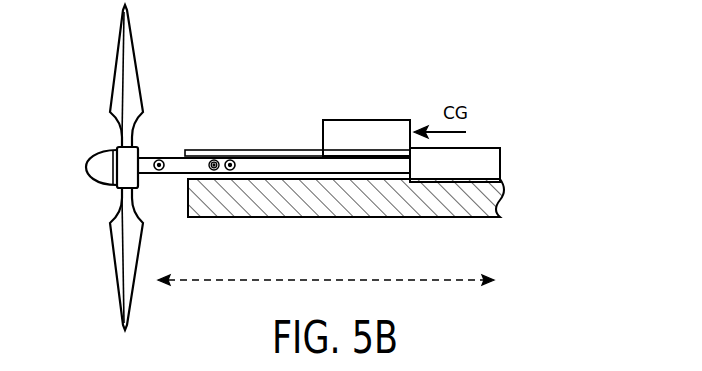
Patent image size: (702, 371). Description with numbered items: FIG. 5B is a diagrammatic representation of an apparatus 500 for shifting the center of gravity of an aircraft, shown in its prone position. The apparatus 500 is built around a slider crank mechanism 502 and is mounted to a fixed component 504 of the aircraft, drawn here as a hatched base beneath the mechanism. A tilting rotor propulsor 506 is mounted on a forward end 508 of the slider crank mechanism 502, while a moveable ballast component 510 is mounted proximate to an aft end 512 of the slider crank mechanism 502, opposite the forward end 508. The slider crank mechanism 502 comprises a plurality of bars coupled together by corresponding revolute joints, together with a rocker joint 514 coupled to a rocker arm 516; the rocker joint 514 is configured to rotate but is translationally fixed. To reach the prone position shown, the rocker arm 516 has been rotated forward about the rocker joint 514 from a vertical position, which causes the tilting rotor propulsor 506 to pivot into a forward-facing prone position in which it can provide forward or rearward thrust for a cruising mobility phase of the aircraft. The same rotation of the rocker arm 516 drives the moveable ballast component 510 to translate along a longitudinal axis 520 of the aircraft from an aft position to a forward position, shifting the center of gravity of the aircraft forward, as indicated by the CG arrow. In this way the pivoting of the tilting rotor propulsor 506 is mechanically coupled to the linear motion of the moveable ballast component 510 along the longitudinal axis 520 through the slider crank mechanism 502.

The apparatus 500 is at (500, 60).
The slider crank mechanism 502 is at (268, 92).
The fixed component 504 is at (395, 218).
The tilting rotor propulsor 506 is at (100, 152).
The forward end 508 is at (74, 168).
The moveable ballast component 510 is at (336, 120).
The aft end 512 is at (505, 170).
The rocker joint 514 is at (214, 160).
The rocker arm 516 is at (173, 160).
The longitudinal axis 520 is at (190, 280).